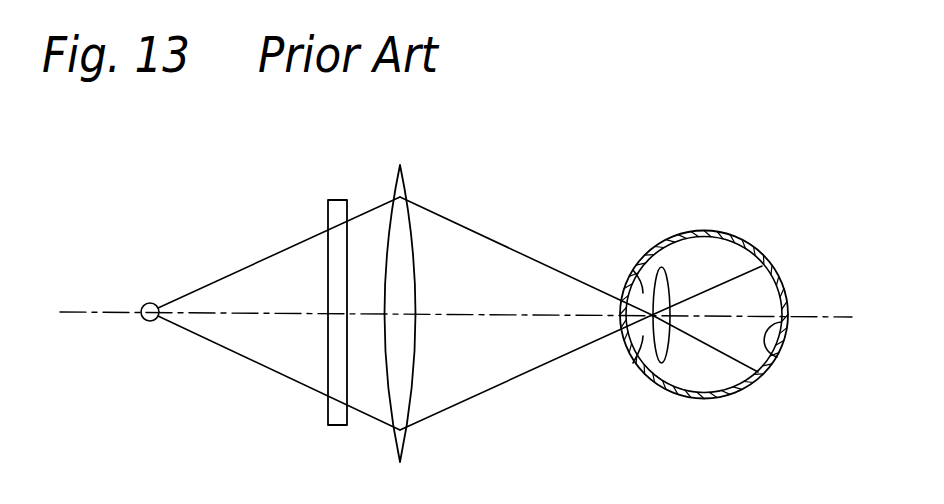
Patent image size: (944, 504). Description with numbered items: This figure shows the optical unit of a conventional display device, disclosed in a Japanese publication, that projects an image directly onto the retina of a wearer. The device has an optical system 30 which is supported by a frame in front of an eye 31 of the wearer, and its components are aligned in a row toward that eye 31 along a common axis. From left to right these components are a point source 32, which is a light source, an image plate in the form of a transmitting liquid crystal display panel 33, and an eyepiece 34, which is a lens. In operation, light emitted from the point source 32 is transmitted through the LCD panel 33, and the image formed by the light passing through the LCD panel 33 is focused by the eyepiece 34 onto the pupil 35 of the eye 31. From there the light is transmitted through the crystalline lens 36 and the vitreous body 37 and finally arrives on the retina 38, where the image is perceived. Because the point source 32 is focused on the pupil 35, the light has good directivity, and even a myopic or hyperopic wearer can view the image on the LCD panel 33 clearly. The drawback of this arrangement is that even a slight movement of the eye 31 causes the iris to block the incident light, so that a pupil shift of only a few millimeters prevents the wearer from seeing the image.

The optical system 30 is at (241, 230).
The eye 31 is at (747, 243).
The point source 32 is at (155, 302).
The LCD panel 33 is at (343, 200).
The eyepiece 34 is at (405, 170).
The pupil 35 is at (625, 275).
The crystalline lens 36 is at (667, 274).
The vitreous body 37 is at (706, 362).
The retina 38 is at (775, 356).